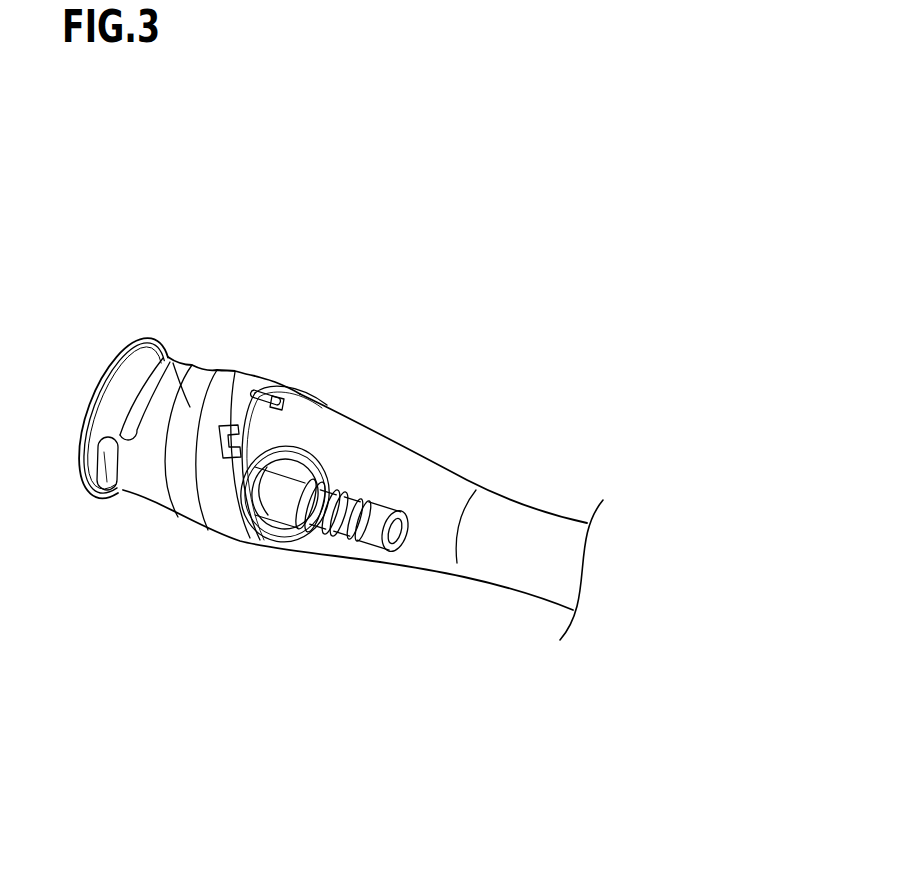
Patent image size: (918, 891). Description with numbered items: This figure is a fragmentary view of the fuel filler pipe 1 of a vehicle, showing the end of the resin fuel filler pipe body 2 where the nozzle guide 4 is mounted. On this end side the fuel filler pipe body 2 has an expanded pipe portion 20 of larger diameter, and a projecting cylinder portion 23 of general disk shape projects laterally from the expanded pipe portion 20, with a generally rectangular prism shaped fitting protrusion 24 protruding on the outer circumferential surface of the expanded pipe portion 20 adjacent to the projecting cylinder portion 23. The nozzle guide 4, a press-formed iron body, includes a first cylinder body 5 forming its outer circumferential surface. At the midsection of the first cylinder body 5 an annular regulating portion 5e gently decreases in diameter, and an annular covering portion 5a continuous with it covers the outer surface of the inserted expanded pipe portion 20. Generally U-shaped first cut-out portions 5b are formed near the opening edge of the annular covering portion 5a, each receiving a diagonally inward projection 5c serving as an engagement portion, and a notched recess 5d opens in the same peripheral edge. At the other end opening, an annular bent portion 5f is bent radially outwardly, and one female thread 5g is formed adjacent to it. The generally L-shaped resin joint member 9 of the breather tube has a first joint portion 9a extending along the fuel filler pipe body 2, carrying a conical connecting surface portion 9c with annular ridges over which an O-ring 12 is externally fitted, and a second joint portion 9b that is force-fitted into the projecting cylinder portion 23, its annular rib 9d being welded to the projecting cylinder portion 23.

The fuel filler pipe 1 is at (458, 289).
The fuel filler pipe body 2 is at (466, 626).
The nozzle guide 4 is at (225, 353).
The first cylinder body 5 is at (105, 542).
The annular covering portion 5a is at (220, 505).
The first cut-out portions 5b is at (192, 492).
The projection 5c is at (243, 378).
The notched recess 5d is at (270, 392).
The annular regulating portion 5e is at (158, 350).
The annular bent portion 5f is at (90, 418).
The female thread 5g is at (103, 477).
The joint member 9 is at (349, 450).
The first joint portion 9a is at (366, 560).
The second joint portion 9b is at (297, 446).
The conical connecting surface portion 9c is at (368, 498).
The annular rib 9d is at (333, 478).
The O-ring 12 is at (350, 545).
The expanded pipe portion 20 is at (298, 540).
The projecting cylinder portion 23 is at (284, 540).
The fitting protrusion 24 is at (283, 397).